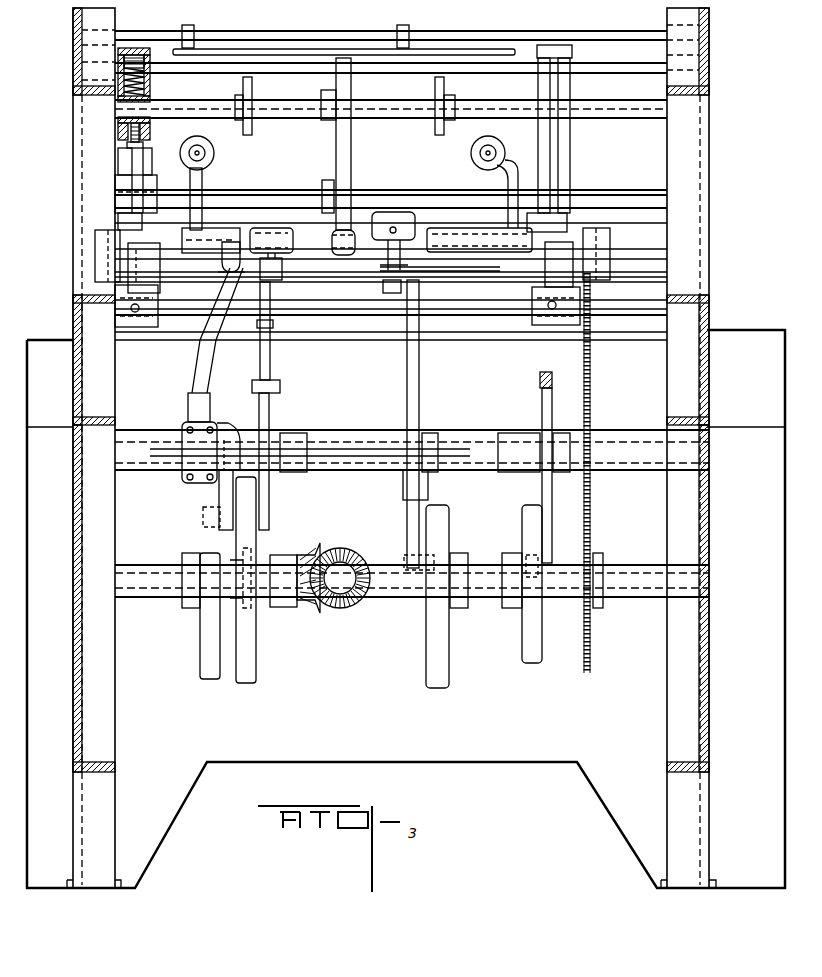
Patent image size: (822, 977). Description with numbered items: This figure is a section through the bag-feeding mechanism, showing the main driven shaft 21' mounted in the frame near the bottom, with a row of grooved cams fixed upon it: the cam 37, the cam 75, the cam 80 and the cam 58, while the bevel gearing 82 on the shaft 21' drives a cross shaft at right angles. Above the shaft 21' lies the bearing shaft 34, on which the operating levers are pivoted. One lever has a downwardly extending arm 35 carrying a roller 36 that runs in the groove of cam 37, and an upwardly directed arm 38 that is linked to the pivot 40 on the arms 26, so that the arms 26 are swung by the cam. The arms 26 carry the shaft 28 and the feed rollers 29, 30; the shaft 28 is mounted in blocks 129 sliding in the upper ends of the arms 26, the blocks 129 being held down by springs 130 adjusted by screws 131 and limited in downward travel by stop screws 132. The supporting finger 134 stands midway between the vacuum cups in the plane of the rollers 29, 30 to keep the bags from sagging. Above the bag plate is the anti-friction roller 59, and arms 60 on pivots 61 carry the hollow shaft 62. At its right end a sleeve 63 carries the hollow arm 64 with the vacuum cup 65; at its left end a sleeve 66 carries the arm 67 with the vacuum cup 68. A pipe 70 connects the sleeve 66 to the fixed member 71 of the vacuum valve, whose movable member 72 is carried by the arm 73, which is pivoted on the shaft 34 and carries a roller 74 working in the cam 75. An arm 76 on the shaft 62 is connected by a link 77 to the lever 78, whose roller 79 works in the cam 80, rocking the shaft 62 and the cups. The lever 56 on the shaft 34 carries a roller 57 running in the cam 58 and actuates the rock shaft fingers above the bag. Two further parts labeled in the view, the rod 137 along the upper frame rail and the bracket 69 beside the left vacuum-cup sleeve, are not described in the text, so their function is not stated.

The screw 131 is at (138, 48).
The rod 137 is at (500, 52).
The block 129 is at (150, 102).
The spring 130 is at (132, 92).
The roller 30 is at (350, 90).
The arm 26 is at (540, 83).
The shaft 28 is at (150, 224).
The vacuum cup 68 is at (212, 150).
The sleeve 66 is at (243, 240).
The shaft 62 is at (322, 242).
The roller 29 is at (352, 160).
The vacuum cup 65 is at (472, 155).
The hollow arm 64 is at (518, 150).
The supporting finger 134 is at (344, 178).
The sleeve 63 is at (505, 232).
The arm 67 is at (203, 182).
The pivot 40 is at (335, 242).
The stop screw 132 is at (142, 146).
The arm 60 is at (105, 257).
The fork 69 is at (213, 270).
The arm 76 is at (296, 278).
The anti-friction roller 59 is at (490, 272).
The link 77 is at (272, 330).
The pipe 70 is at (211, 360).
The upwardly directed arm 38 is at (420, 358).
The lever 56 is at (548, 392).
The fixed member 71 is at (203, 432).
The movable member 72 is at (226, 438).
The lever 78 is at (268, 428).
The bearing shaft 34 is at (468, 455).
The downwardly extending arm 35 is at (422, 490).
The cam 58 is at (522, 505).
The arm 73 is at (225, 505).
The bevel gearing 82 is at (340, 548).
The roller 36 is at (452, 548).
The roller 57 is at (528, 555).
The roller 74 is at (190, 540).
The shaft 21' is at (412, 595).
The roller 79 is at (250, 617).
The cam 37 is at (442, 656).
The cam 75 is at (205, 648).
The cam 80 is at (250, 672).
The pivot 61 is at (556, 283).